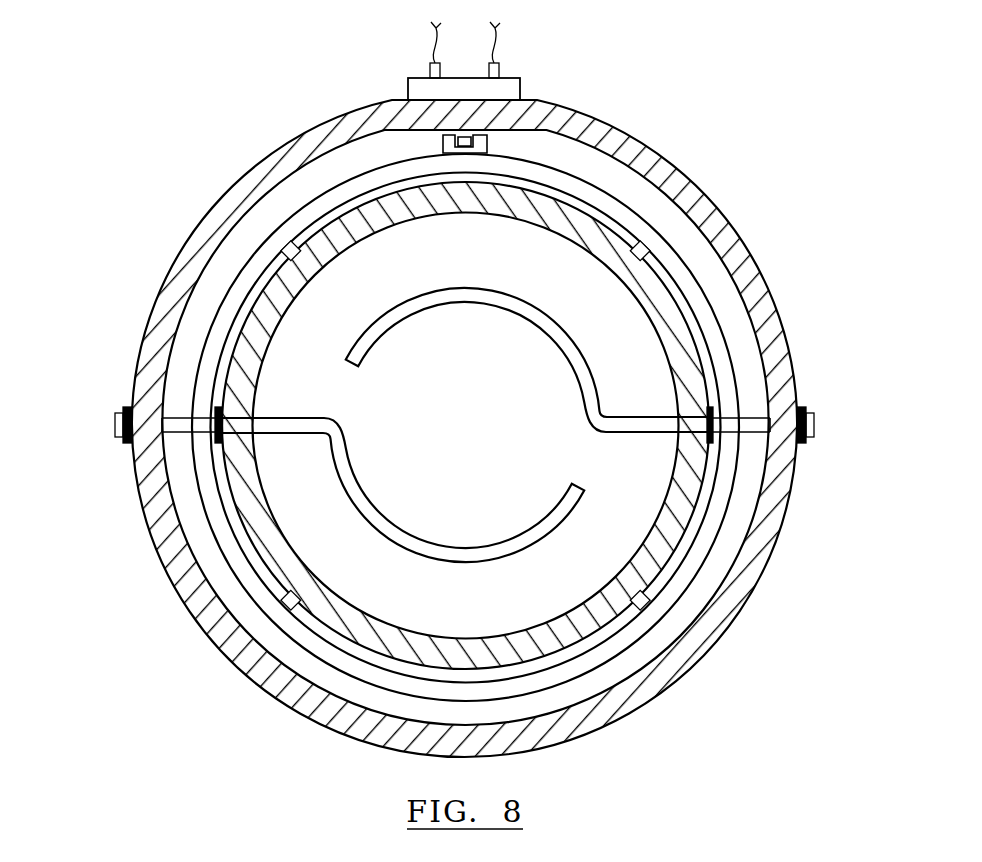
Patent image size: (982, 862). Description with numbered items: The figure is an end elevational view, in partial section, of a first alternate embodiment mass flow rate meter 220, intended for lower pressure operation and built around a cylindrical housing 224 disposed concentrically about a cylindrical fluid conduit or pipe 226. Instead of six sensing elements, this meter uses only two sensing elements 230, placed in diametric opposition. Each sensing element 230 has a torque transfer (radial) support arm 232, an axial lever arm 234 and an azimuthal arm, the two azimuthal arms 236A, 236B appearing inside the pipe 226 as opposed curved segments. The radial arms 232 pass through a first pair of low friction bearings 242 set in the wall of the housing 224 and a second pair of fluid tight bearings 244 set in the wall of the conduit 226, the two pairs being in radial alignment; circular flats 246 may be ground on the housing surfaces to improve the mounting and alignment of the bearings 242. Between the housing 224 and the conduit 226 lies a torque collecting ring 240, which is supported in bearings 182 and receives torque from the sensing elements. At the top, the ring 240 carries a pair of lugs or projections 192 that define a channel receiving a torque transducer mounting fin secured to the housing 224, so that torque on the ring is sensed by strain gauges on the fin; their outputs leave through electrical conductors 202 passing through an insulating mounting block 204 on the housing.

The bearings 182 is at (284, 600).
The lugs or projections 192 is at (486, 142).
The electrical conductors 202 is at (496, 50).
The insulating mounting block 204 is at (444, 55).
The first alternate embodiment mass flow rate meter 220 is at (790, 109).
The housing 224 is at (735, 262).
The fluid conduit or pipe 226 is at (680, 512).
The sensing element 230 is at (466, 427).
The torque transfer (radial) support arm 232 is at (152, 470).
The axial lever arm 234 is at (192, 425).
The azimuthal arm 236A is at (522, 316).
The azimuthal arm 236B is at (522, 522).
The torque collecting ring 240 is at (583, 655).
The low friction bearings 242 is at (130, 444).
The fluid tight bearings 244 is at (215, 404).
The circular flats 246 is at (115, 420).